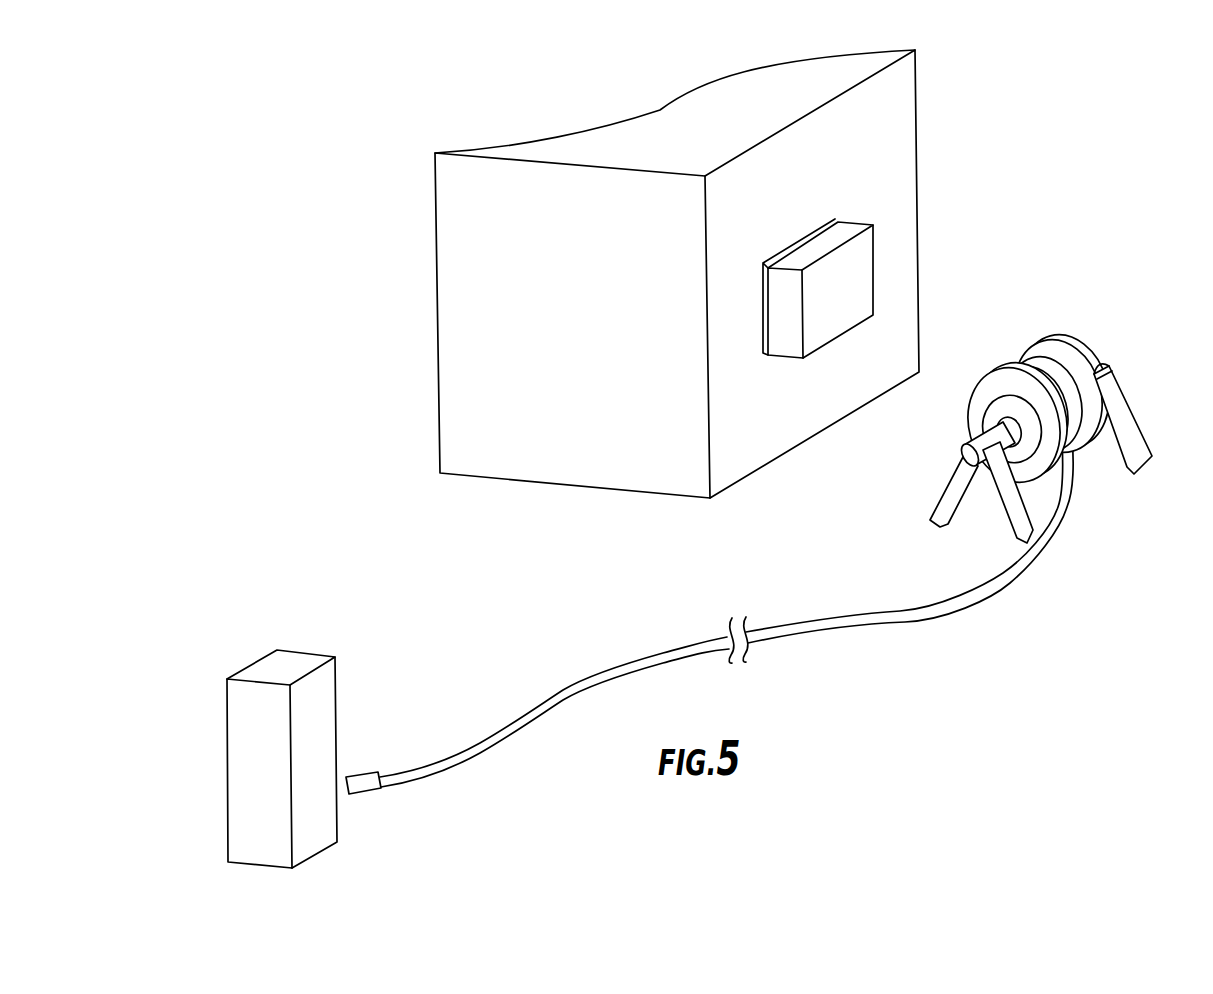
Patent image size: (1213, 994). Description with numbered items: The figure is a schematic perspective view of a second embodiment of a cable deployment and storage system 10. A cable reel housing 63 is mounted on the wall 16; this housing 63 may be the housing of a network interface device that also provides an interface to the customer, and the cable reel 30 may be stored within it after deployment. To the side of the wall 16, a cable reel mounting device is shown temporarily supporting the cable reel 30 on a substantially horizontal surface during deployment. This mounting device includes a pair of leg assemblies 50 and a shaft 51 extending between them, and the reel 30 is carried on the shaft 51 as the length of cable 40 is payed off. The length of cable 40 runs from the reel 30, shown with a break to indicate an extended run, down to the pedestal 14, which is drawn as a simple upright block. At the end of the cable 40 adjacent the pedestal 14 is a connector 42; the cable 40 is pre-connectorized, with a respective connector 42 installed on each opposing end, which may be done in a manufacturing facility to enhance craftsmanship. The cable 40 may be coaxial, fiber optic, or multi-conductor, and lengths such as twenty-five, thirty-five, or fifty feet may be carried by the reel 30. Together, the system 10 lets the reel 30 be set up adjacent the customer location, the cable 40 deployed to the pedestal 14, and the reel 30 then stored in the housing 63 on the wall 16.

The cable deployment and storage system 10 is at (266, 391).
The pedestal 14 is at (287, 737).
The wall 16 is at (677, 274).
The cable reel housing 63 is at (866, 288).
The cable reel 30 is at (1037, 402).
The shaft 51 is at (961, 433).
The leg assemblies 50 is at (1035, 445).
The length of cable 40 is at (726, 608).
The connector 42 is at (379, 754).